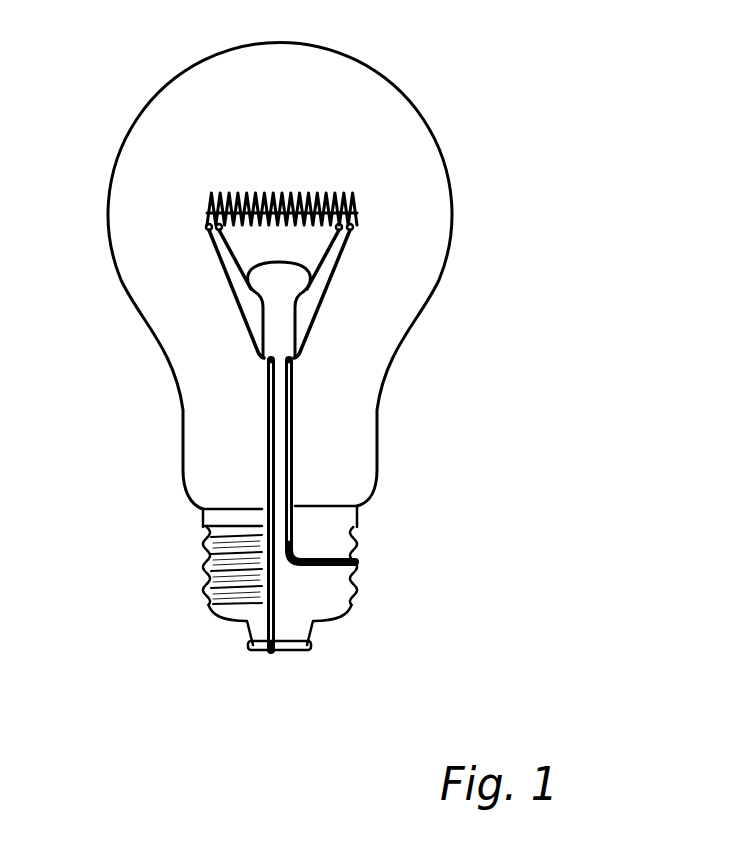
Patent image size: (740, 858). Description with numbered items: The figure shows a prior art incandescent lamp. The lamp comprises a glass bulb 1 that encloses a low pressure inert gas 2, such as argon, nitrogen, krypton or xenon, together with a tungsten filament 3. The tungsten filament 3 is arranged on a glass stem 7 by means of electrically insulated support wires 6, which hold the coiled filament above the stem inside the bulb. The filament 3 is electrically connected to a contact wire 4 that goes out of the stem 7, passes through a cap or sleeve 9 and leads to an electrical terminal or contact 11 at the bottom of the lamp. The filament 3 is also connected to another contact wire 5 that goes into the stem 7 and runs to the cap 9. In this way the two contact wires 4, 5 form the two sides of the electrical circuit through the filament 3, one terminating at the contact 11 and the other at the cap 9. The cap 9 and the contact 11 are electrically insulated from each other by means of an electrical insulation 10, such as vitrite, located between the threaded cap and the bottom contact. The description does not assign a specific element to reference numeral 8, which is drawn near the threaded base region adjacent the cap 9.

The glass bulb 1 is at (290, 385).
The low pressure inert gas 2 is at (367, 62).
The tungsten filament 3 is at (357, 207).
The contact wire 4 is at (245, 257).
The contact wire 5 is at (337, 268).
The support wires 6 is at (238, 260).
The glass stem 7 is at (295, 322).
The screw base 8 is at (279, 637).
The cap 9 is at (205, 570).
The electrical insulation 10 is at (312, 612).
The contact 11 is at (283, 652).